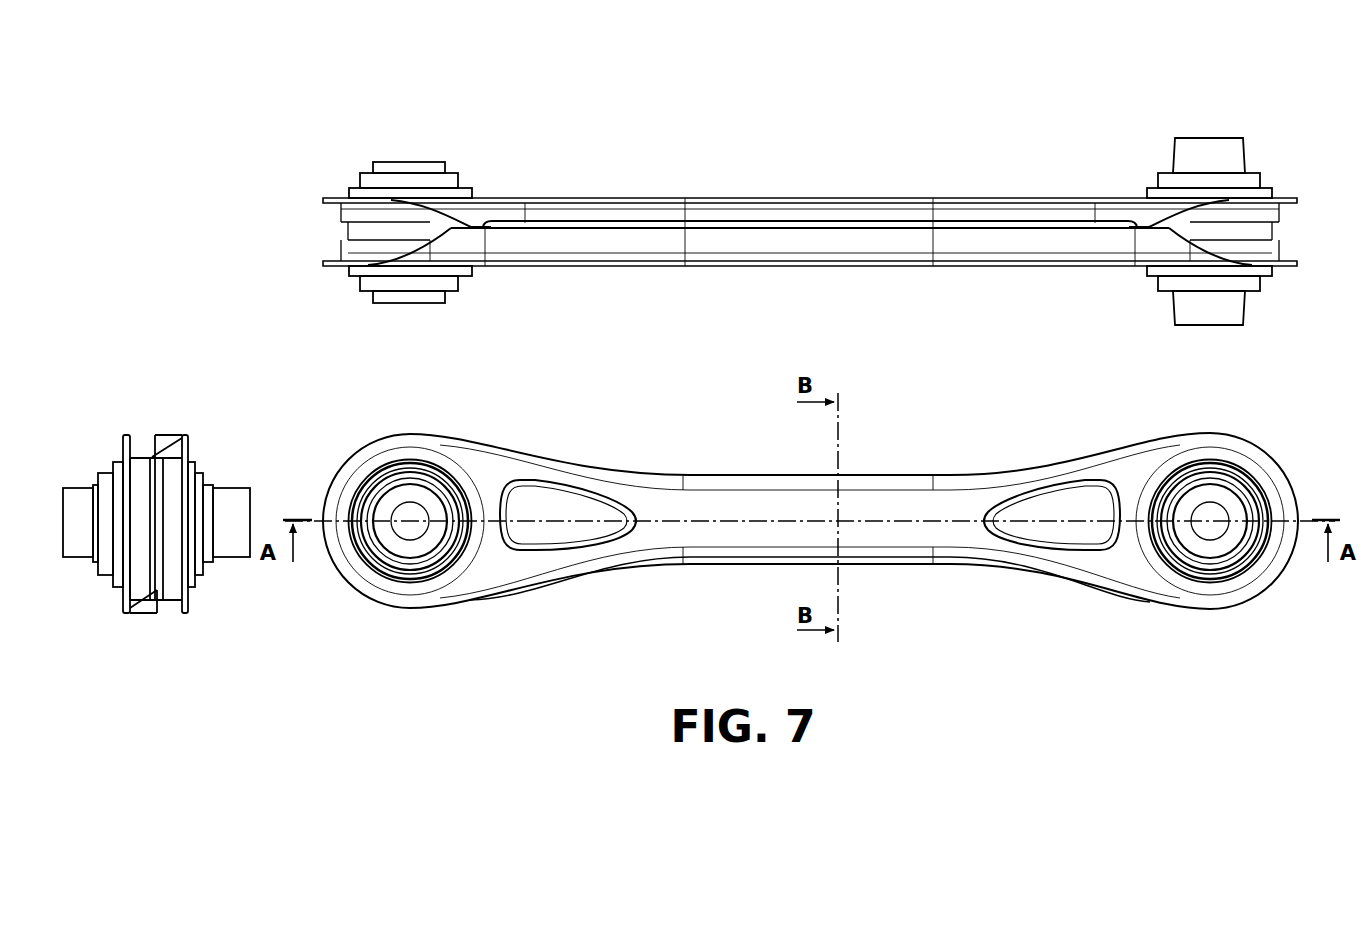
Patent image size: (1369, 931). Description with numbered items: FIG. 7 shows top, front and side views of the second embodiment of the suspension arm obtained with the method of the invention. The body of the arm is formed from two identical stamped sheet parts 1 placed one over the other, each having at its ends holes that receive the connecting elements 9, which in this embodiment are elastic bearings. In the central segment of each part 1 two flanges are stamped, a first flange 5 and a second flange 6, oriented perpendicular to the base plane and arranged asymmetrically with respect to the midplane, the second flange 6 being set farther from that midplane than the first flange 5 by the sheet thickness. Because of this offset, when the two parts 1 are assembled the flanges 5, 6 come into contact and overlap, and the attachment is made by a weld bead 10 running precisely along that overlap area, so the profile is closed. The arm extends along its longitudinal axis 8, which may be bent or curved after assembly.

The part 1 is at (973, 196).
The first flange 5 is at (749, 238).
The second flange 6 is at (747, 217).
The longitudinal axis 8 is at (761, 523).
The connecting element 9 is at (1213, 136).
The weld bead 10 is at (833, 226).